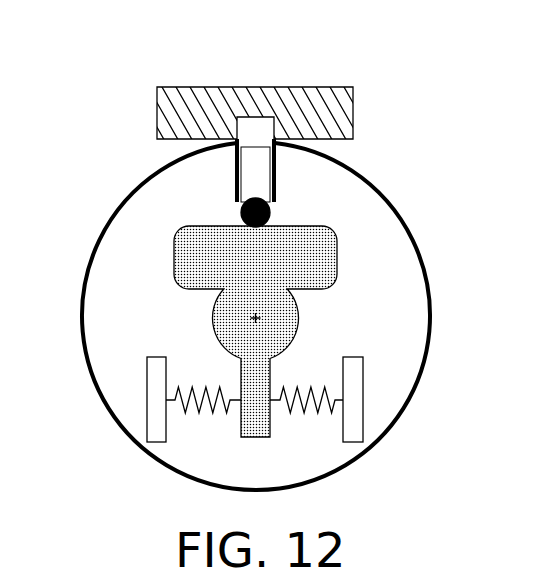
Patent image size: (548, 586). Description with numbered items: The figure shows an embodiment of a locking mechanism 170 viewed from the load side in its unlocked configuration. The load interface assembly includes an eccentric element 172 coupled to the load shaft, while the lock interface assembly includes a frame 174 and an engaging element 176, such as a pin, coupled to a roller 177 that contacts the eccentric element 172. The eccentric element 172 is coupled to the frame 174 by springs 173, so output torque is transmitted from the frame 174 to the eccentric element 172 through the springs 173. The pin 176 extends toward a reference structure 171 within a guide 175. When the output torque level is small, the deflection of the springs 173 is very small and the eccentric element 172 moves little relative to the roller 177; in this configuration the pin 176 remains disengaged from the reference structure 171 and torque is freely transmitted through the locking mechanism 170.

The locking mechanism 170 is at (79, 66).
The reference structure 171 is at (353, 110).
The eccentric element 172 is at (255, 331).
The springs 173 is at (303, 412).
The frame 174 is at (428, 272).
The guide tube 175 is at (276, 178).
The engaging element 176 is at (236, 166).
The roller 177 is at (242, 208).